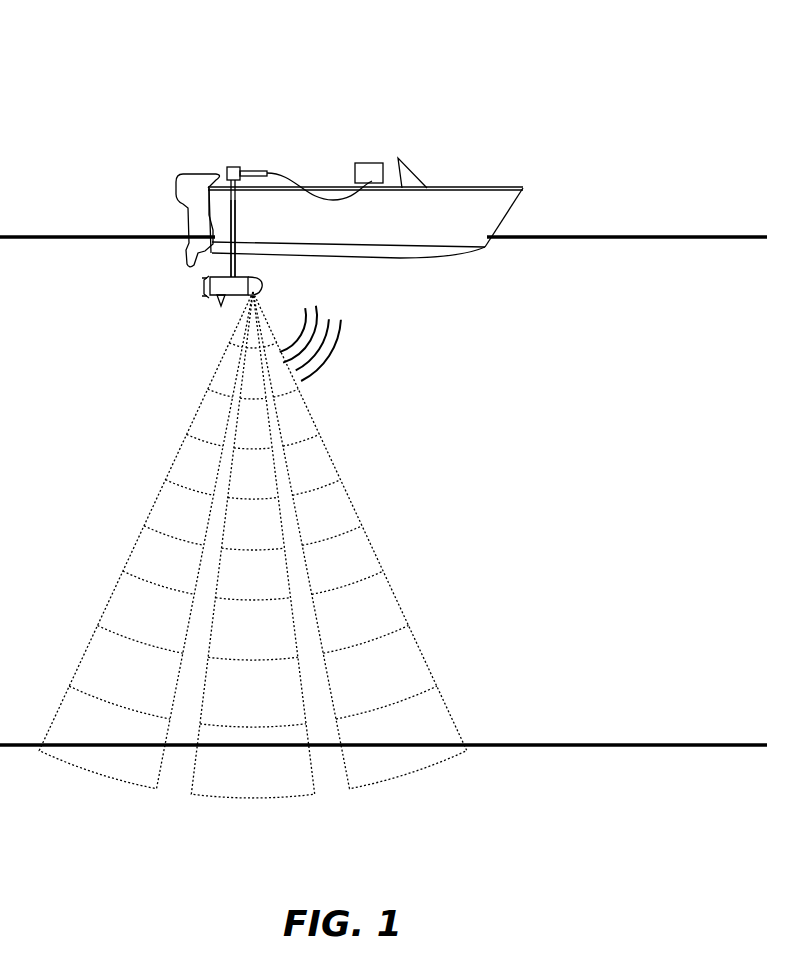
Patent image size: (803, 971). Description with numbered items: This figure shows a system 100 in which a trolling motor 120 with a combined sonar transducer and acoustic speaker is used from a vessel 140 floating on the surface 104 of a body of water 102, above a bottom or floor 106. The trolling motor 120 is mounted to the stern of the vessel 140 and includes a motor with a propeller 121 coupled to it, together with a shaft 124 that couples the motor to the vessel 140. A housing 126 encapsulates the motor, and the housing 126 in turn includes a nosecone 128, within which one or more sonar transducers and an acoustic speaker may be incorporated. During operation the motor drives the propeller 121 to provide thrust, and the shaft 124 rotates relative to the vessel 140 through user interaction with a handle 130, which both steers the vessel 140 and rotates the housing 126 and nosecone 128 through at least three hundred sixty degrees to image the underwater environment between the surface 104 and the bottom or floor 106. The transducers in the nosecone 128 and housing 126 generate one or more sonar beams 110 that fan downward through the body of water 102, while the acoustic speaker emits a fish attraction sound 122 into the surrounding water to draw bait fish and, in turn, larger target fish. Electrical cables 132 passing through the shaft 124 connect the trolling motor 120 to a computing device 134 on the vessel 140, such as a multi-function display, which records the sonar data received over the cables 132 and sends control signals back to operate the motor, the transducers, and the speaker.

The sonar system 100 is at (58, 30).
The body of water 102 is at (755, 394).
The surface 104 is at (730, 230).
The bottom or floor 106 is at (748, 736).
The sonar beams 110 is at (336, 397).
The trolling motor 120 is at (232, 162).
The propeller 121 is at (203, 283).
The fish attraction sound 122 is at (337, 350).
The shaft 124 is at (238, 218).
The housing 126 is at (220, 301).
The nosecone 128 is at (262, 282).
The handle 130 is at (255, 171).
The electrical cables 132 is at (357, 204).
The computing device 134 is at (382, 163).
The vessel 140 is at (439, 226).